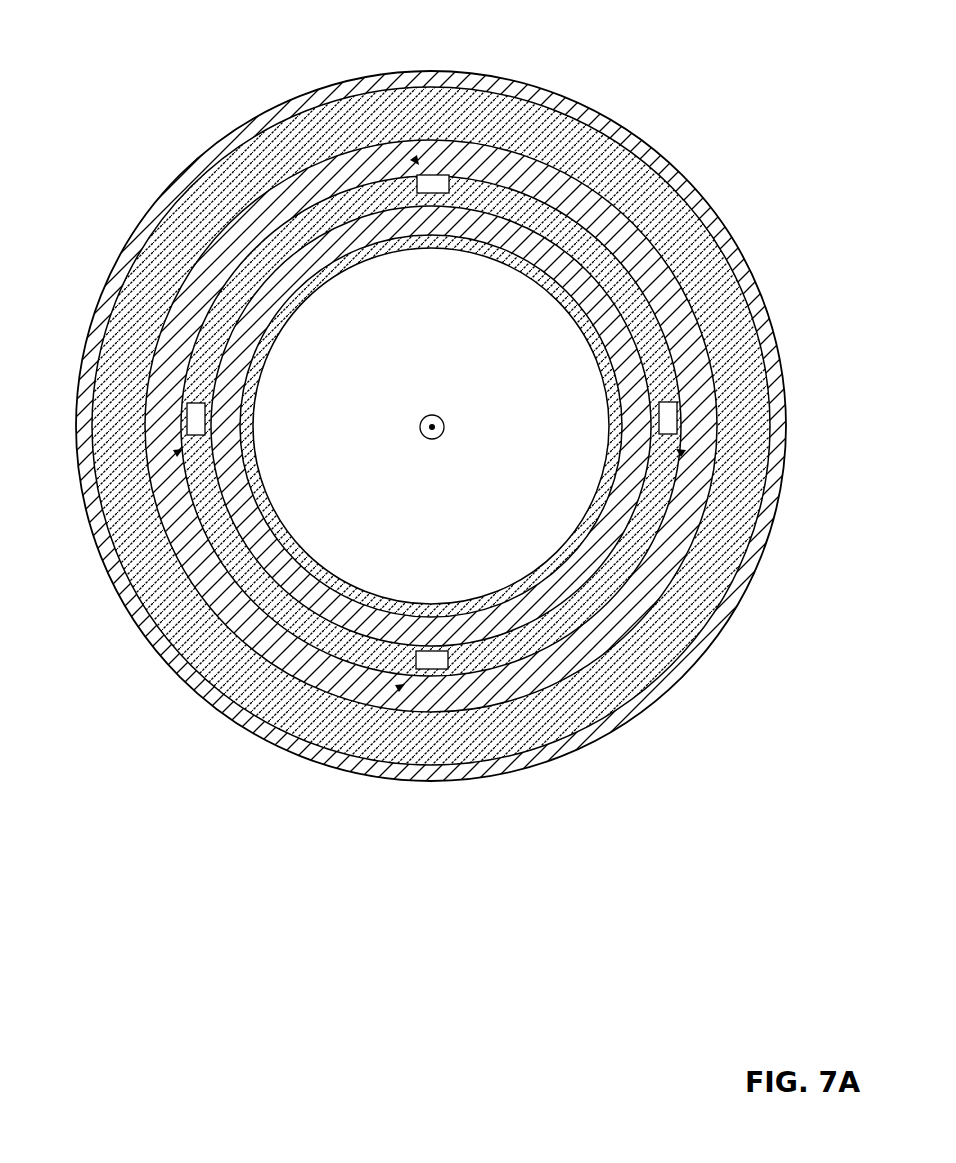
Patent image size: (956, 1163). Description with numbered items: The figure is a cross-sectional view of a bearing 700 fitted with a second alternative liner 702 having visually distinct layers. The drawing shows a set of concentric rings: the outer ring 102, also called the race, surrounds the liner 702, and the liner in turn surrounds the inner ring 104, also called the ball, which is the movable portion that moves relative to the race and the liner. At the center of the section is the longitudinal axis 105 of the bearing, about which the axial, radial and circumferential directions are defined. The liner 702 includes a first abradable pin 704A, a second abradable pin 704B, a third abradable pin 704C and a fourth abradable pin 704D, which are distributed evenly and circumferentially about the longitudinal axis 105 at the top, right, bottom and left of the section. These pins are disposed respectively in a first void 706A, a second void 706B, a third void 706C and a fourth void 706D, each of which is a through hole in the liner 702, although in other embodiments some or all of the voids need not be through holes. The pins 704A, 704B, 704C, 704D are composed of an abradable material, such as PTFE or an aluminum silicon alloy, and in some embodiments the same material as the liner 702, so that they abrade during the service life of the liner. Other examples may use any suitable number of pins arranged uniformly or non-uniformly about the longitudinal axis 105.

The bearing 700 is at (660, 45).
The outer ring 102 is at (655, 206).
The inner ring 104 is at (248, 563).
The longitudinal axis 105 is at (428, 413).
The liner 702 is at (290, 236).
The first abradable pin 704A is at (432, 175).
The second abradable pin 704B is at (670, 402).
The third abradable pin 704C is at (434, 672).
The fourth abradable pin 704D is at (194, 402).
The first void 706A is at (415, 160).
The second void 706B is at (680, 452).
The third void 706C is at (400, 688).
The fourth void 706D is at (178, 452).